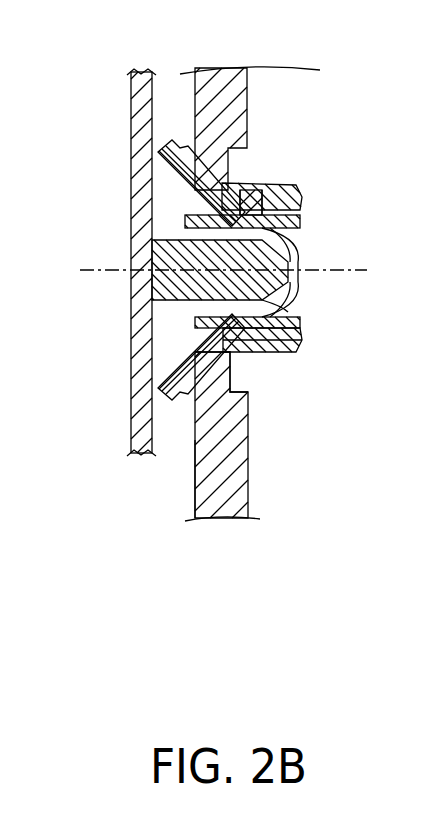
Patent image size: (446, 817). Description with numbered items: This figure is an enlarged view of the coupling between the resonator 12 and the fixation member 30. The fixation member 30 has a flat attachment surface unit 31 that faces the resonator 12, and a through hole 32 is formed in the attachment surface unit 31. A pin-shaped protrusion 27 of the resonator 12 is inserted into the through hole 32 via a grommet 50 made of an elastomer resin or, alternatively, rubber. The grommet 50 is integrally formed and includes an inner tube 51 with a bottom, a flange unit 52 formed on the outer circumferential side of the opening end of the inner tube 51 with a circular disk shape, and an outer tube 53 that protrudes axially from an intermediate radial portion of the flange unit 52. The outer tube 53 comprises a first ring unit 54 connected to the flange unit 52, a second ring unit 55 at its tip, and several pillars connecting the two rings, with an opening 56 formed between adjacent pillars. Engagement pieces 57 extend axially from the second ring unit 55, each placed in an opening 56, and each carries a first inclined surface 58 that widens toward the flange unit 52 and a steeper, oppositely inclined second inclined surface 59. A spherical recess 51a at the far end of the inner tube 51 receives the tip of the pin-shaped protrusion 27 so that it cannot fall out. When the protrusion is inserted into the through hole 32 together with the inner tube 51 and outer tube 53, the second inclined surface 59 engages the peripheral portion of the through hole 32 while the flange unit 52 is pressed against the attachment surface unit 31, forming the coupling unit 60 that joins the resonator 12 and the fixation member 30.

The resonator 12 is at (130, 148).
The pin-shaped protrusion 27 is at (284, 228).
The fixation member 30 is at (250, 480).
The attachment surface unit 31 is at (190, 463).
The through hole 32 is at (265, 312).
The grommet 50 is at (277, 178).
The inner tube 51 is at (294, 247).
The recess 51a is at (132, 298).
The flange unit 52 is at (130, 222).
The outer tube 53 is at (212, 178).
The first ring unit 54 is at (130, 332).
The second ring unit 55 is at (285, 320).
The opening 56 is at (255, 178).
The engagement piece 57 is at (268, 182).
The first inclined surface 58 is at (292, 340).
The second inclined surface 59 is at (205, 357).
The coupling unit 60 is at (297, 292).